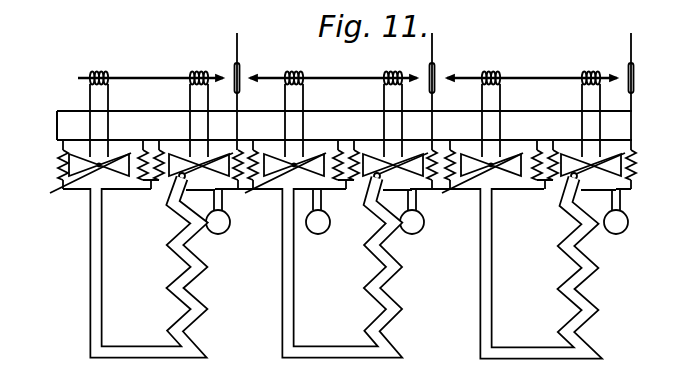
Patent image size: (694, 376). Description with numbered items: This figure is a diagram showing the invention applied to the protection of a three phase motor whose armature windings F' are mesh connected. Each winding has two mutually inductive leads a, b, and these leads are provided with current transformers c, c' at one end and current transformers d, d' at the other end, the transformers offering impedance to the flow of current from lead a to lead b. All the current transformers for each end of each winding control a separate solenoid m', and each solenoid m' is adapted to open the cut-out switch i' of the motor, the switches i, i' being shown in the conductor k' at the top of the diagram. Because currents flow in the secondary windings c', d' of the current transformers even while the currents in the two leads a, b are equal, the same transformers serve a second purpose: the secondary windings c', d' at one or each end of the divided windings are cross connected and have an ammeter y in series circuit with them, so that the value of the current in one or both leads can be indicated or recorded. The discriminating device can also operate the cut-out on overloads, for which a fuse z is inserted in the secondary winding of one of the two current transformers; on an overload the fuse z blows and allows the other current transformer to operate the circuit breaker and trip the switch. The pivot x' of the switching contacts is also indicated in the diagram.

The main conductor k' is at (347, 64).
The solenoid m' is at (349, 98).
The switch i is at (247, 91).
The cut-out switch i' is at (545, 91).
The current transformer c is at (339, 157).
The secondary winding of current transformer c' is at (340, 199).
The current transformer d is at (348, 148).
The secondary winding of current transformer d' is at (344, 201).
The fuse z is at (72, 192).
The pivot x' is at (375, 201).
The ammeter y is at (231, 223).
The armature windings F' is at (358, 265).
The lead a is at (172, 263).
The lead b is at (198, 265).